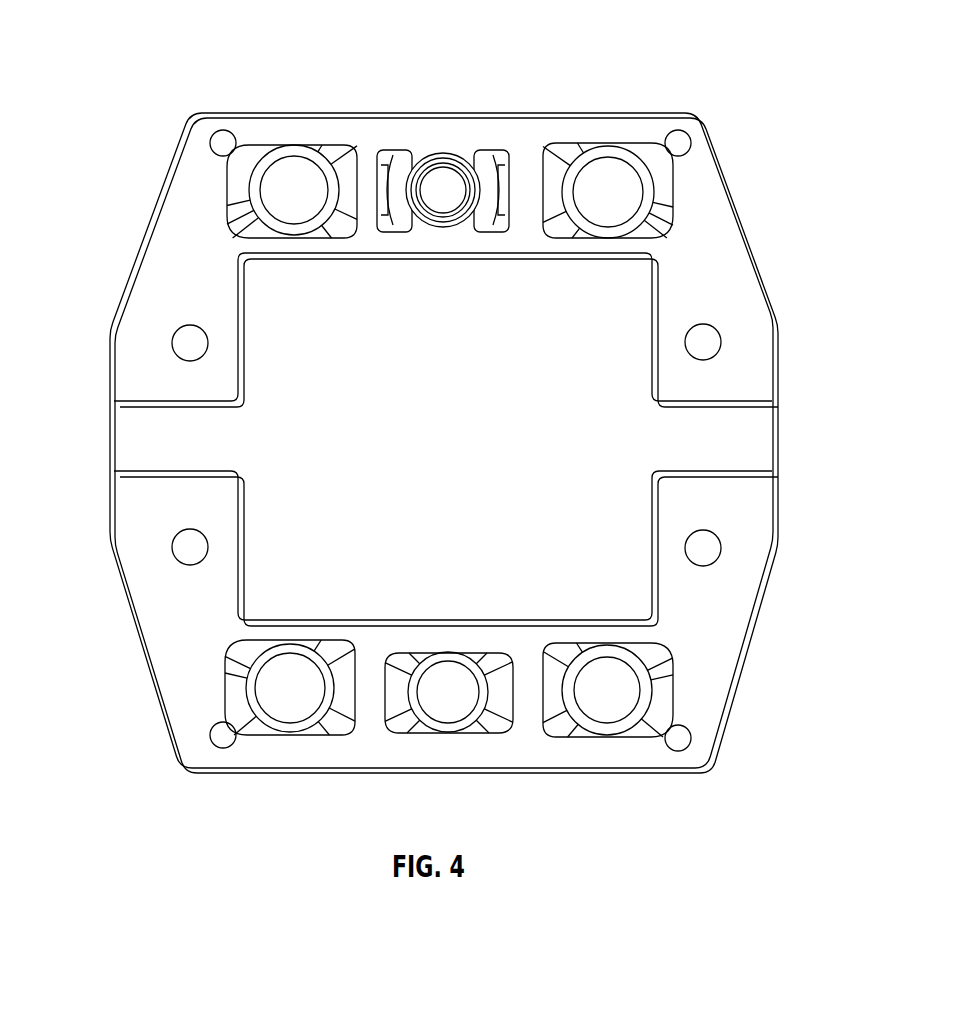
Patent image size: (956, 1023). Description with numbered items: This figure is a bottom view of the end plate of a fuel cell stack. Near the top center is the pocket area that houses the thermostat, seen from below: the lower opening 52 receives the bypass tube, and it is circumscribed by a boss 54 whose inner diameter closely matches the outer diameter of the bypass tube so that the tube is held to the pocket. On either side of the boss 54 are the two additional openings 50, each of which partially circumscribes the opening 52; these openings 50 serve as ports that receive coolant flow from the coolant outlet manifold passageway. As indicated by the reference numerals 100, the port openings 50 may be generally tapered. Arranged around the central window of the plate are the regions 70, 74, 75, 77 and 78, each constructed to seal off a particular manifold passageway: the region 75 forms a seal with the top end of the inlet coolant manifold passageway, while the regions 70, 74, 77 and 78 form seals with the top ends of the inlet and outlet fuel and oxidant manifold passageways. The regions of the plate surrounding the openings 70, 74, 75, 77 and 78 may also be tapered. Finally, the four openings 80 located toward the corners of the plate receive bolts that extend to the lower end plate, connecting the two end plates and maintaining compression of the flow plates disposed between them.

The openings 50 is at (449, 146).
The lower opening 52 is at (478, 125).
The boss 54 is at (409, 125).
The region 70 is at (635, 131).
The region 74 is at (649, 735).
The region 75 is at (488, 740).
The region 77 is at (332, 734).
The region 78 is at (267, 125).
The openings 80 is at (441, 444).
The tapered port openings 100 is at (455, 153).